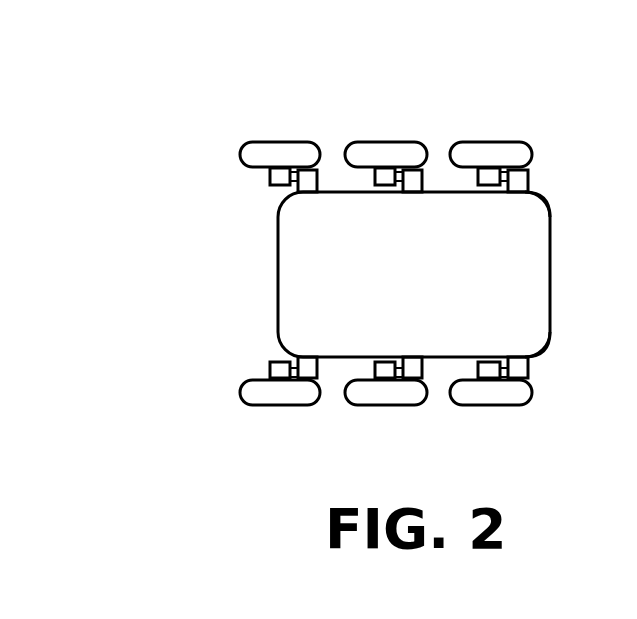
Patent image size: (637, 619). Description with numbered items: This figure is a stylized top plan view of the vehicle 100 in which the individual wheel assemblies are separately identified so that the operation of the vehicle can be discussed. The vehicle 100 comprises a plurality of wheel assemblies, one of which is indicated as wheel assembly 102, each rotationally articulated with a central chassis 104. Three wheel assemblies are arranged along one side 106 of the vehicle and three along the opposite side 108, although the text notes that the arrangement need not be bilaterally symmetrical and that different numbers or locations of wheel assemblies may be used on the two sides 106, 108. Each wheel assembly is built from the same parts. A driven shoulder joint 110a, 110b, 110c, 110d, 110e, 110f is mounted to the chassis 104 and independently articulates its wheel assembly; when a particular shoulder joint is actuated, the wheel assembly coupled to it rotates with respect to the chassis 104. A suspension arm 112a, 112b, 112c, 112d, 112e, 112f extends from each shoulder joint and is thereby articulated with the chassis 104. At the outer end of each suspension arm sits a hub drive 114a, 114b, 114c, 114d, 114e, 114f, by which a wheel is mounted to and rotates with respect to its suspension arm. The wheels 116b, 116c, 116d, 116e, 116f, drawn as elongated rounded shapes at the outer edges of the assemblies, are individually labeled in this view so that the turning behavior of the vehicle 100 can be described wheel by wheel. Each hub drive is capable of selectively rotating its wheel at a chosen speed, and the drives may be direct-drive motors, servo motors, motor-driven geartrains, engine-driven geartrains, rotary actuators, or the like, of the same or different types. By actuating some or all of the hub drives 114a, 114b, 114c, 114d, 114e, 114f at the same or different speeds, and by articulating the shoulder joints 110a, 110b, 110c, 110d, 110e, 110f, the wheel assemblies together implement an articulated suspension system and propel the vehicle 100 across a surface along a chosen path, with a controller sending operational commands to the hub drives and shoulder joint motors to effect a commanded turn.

The vehicle 100 is at (84, 51).
The wheel assembly 102 is at (222, 96).
The chassis 104 is at (431, 281).
The side of the vehicle 106 is at (540, 196).
The side of the vehicle 108 is at (535, 352).
The shoulder joint 110a is at (312, 356).
The shoulder joint 110b is at (418, 356).
The shoulder joint 110c is at (518, 356).
The shoulder joint 110d is at (310, 193).
The shoulder joint 110e is at (416, 193).
The shoulder joint 110f is at (520, 193).
The suspension arm 112a is at (293, 363).
The suspension arm 112b is at (400, 361).
The suspension arm 112c is at (504, 361).
The suspension arm 112d is at (292, 186).
The suspension arm 112e is at (399, 188).
The suspension arm 112f is at (503, 188).
The hub drive 114a is at (268, 367).
The hub drive 114b is at (373, 373).
The hub drive 114c is at (477, 373).
The hub drive 114d is at (268, 178).
The hub drive 114e is at (373, 171).
The hub drive 114f is at (477, 171).
The wheel 116b is at (385, 407).
The wheel 116c is at (493, 407).
The wheel 116d is at (243, 147).
The wheel 116e is at (386, 142).
The wheel 116f is at (494, 142).